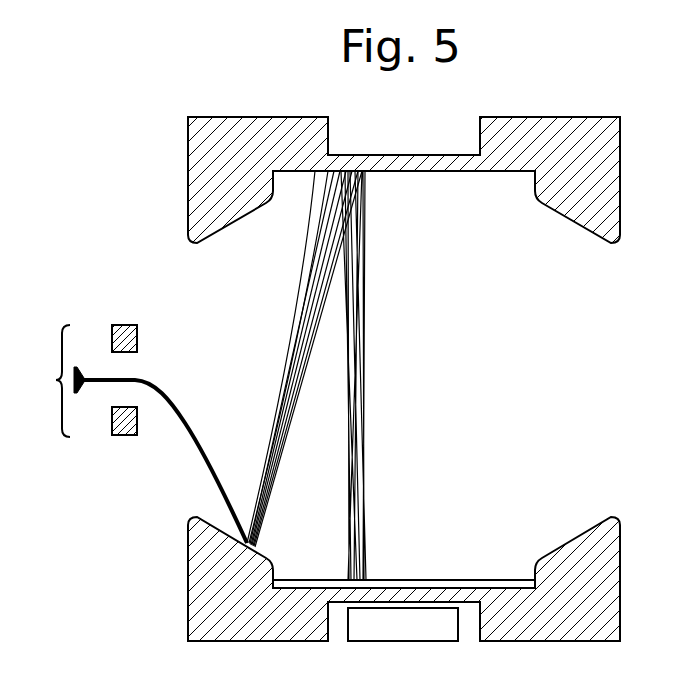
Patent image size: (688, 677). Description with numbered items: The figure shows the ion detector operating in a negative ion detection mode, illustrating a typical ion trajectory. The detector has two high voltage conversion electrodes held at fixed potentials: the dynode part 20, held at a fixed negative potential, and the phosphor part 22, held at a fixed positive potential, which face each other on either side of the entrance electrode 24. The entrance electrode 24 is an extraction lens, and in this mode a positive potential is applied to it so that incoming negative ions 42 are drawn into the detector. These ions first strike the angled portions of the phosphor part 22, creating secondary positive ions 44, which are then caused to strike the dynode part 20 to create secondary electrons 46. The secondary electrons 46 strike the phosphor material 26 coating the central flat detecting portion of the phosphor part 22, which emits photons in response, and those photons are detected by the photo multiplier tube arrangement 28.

The dynode part 20 is at (570, 214).
The phosphor part 22 is at (592, 525).
The entrance electrode 24 is at (78, 381).
The phosphor material 26 is at (502, 578).
The photo multiplier tube arrangement 28 is at (430, 620).
The incoming negative ions 42 is at (148, 378).
The secondary positive ions 44 is at (293, 393).
The secondary electrons 46 is at (365, 412).